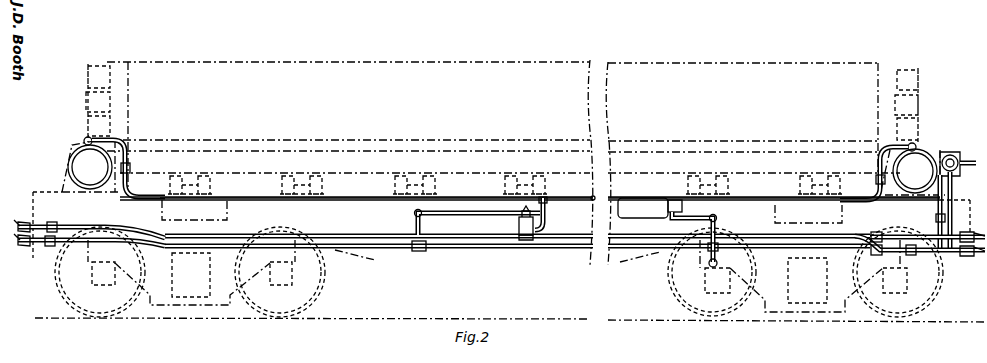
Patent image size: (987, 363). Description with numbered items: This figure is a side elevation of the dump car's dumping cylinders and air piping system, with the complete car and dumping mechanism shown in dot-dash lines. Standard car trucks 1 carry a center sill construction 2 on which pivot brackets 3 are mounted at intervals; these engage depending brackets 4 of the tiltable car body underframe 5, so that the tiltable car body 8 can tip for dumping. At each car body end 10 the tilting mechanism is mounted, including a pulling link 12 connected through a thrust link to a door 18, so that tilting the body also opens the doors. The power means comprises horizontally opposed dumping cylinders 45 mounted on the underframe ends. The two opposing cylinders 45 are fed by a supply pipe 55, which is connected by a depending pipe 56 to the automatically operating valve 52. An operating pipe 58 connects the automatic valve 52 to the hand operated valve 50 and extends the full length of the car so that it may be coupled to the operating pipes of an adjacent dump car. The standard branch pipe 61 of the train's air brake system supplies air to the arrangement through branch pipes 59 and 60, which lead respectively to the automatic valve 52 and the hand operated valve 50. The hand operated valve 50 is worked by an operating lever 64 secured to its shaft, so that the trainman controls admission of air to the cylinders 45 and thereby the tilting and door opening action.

The car trucks 1 is at (168, 297).
The center sill construction 2 is at (378, 222).
The pivot brackets 3 is at (395, 182).
The depending brackets 4 is at (305, 185).
The tiltable car body underframe 5 is at (273, 158).
The tiltable car body 8 is at (408, 80).
The car body ends 10 is at (120, 64).
The pulling link 12 is at (99, 66).
The door 18 is at (917, 72).
The dumping cylinders 45 is at (85, 166).
The hand operated valve 50 is at (954, 158).
The automatically operating valve 52 is at (520, 226).
The supply pipe 55 is at (452, 197).
The depending pipe 56 is at (546, 214).
The operating pipe 58 is at (24, 243).
The branch pipe 59 is at (420, 216).
The branch pipe 60 is at (878, 250).
The standard branch pipe of the train 61 is at (470, 249).
The operating lever 64 is at (968, 166).